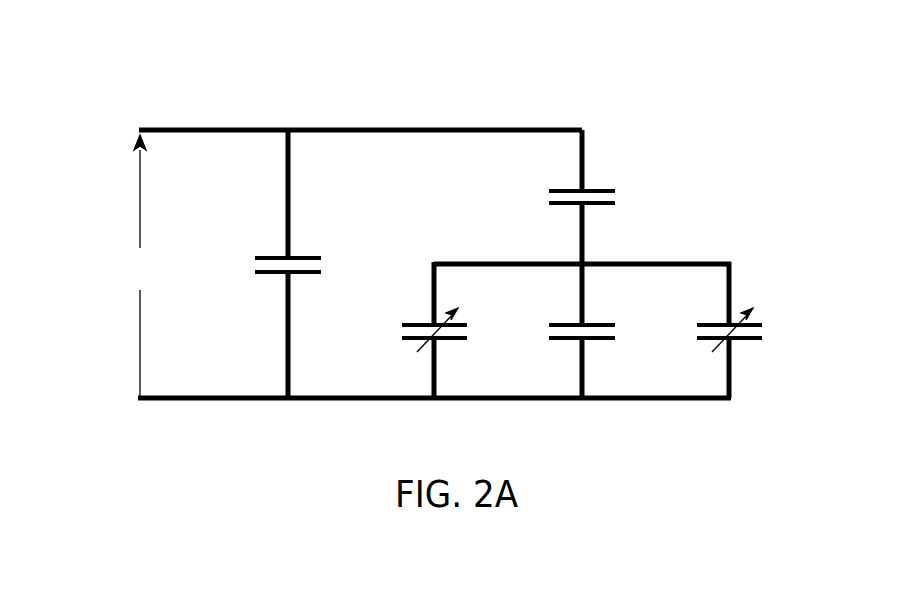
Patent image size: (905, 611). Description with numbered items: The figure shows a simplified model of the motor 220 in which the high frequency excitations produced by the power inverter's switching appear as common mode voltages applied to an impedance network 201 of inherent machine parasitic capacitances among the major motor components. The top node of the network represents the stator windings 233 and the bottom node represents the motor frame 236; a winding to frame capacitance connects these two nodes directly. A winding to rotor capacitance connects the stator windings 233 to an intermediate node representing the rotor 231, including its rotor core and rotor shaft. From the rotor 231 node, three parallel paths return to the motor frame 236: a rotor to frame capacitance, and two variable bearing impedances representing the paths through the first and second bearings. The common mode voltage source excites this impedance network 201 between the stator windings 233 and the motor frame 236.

The motor 220 is at (197, 62).
The impedance network 201 is at (685, 190).
The stator windings 233 is at (315, 128).
The rotor 231 is at (540, 262).
The motor frame 236 is at (362, 402).